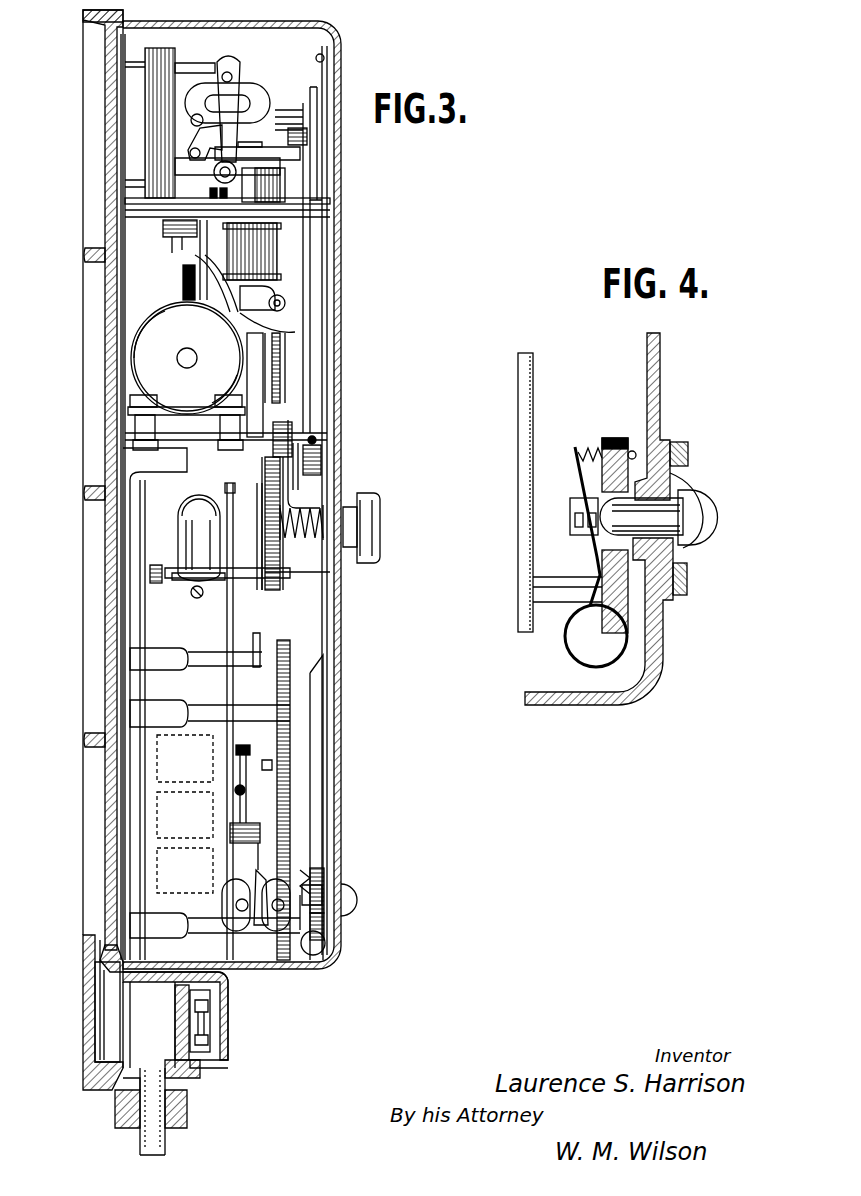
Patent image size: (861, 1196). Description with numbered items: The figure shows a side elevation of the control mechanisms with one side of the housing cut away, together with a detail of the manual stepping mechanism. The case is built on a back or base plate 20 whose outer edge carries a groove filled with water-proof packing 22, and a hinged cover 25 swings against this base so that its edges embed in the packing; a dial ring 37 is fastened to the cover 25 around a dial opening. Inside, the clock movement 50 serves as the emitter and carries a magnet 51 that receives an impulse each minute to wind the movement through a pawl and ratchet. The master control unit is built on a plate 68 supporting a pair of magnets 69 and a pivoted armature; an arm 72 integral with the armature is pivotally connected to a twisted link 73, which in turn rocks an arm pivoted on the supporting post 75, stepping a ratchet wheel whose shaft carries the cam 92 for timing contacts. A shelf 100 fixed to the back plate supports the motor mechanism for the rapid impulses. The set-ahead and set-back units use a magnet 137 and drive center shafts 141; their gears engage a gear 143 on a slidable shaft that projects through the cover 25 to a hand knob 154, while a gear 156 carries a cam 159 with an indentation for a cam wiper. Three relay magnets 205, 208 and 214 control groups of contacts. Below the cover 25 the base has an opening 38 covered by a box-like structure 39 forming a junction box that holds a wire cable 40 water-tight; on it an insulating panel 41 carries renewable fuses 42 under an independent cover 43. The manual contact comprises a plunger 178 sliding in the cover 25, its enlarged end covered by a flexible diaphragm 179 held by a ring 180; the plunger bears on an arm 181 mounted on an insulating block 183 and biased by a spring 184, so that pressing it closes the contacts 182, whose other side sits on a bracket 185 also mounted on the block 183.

In FIG. 3, the base plate 20 is at (113, 815).
In FIG. 3, the water-proof packing 22 is at (118, 23).
In FIG. 3, the cover 25 is at (328, 25).
In FIG. 4, the cover 25 is at (663, 392).
In FIG. 3, the dial ring 37 is at (318, 88).
In FIG. 3, the magnets 69 is at (267, 182).
In FIG. 3, the supporting post 75 is at (290, 228).
In FIG. 3, the cam 92 is at (170, 255).
In FIG. 3, the plate 68 is at (267, 282).
In FIG. 3, the twisted link 73 is at (193, 300).
In FIG. 3, the arm 72 is at (295, 332).
In FIG. 3, the gear 156 is at (280, 440).
In FIG. 3, the cam 159 is at (310, 433).
In FIG. 3, the shelf 100 is at (210, 438).
In FIG. 3, the hand knob 154 is at (375, 500).
In FIG. 3, the magnet 137 is at (192, 517).
In FIG. 3, the gear 143 is at (268, 575).
In FIG. 3, the center shafts 141 is at (242, 582).
In FIG. 3, the relay magnet 205 is at (185, 758).
In FIG. 3, the relay magnet 208 is at (185, 815).
In FIG. 3, the relay magnet 214 is at (185, 870).
In FIG. 3, the clock movement 50 is at (290, 845).
In FIG. 3, the magnet 51 is at (247, 917).
In FIG. 3, the insulating block 183 is at (320, 872).
In FIG. 4, the insulating block 183 is at (615, 437).
In FIG. 3, the diaphragm 179 is at (347, 893).
In FIG. 4, the diaphragm 179 is at (700, 495).
In FIG. 3, the contacts 182 is at (320, 922).
In FIG. 4, the contacts 182 is at (590, 525).
In FIG. 3, the opening 38 is at (97, 993).
In FIG. 3, the cover 43 is at (223, 1042).
In FIG. 3, the renewable fuses 42 is at (203, 1022).
In FIG. 3, the insulating panel 41 is at (200, 1073).
In FIG. 3, the box-like structure 39 is at (127, 1080).
In FIG. 3, the wire cable 40 is at (188, 1122).
In FIG. 4, the ring 180 is at (688, 447).
In FIG. 4, the plunger 178 is at (688, 580).
In FIG. 4, the spring 184 is at (592, 450).
In FIG. 4, the arm 181 is at (578, 472).
In FIG. 4, the bracket 185 is at (582, 500).